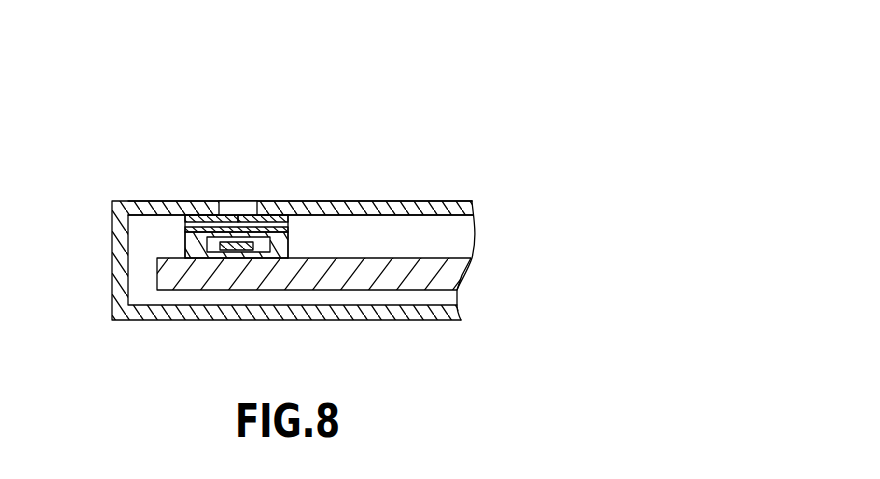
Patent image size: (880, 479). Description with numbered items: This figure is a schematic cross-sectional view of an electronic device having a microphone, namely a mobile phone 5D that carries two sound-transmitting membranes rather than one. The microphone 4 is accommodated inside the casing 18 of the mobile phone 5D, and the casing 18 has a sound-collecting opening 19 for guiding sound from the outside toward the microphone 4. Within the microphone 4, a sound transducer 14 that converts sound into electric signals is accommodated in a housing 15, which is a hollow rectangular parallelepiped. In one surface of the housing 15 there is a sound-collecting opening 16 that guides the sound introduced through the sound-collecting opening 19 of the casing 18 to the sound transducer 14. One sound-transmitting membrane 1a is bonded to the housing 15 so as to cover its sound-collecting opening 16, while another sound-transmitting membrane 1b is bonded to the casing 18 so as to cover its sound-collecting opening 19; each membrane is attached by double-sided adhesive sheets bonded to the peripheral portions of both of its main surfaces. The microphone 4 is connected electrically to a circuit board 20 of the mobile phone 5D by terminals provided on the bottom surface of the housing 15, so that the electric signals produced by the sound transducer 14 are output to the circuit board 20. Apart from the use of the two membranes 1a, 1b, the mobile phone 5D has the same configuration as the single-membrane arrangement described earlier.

The mobile phone 5D is at (463, 148).
The microphone 4 is at (180, 242).
The casing 18 is at (386, 206).
The circuit board 20 is at (166, 273).
The sound-collecting opening 19 is at (237, 201).
The sound-transmitting membrane 1a is at (200, 216).
The sound-transmitting membrane 1b is at (288, 215).
The sound-collecting opening 16 is at (290, 227).
The housing 15 is at (283, 252).
The sound transducer 14 is at (246, 243).